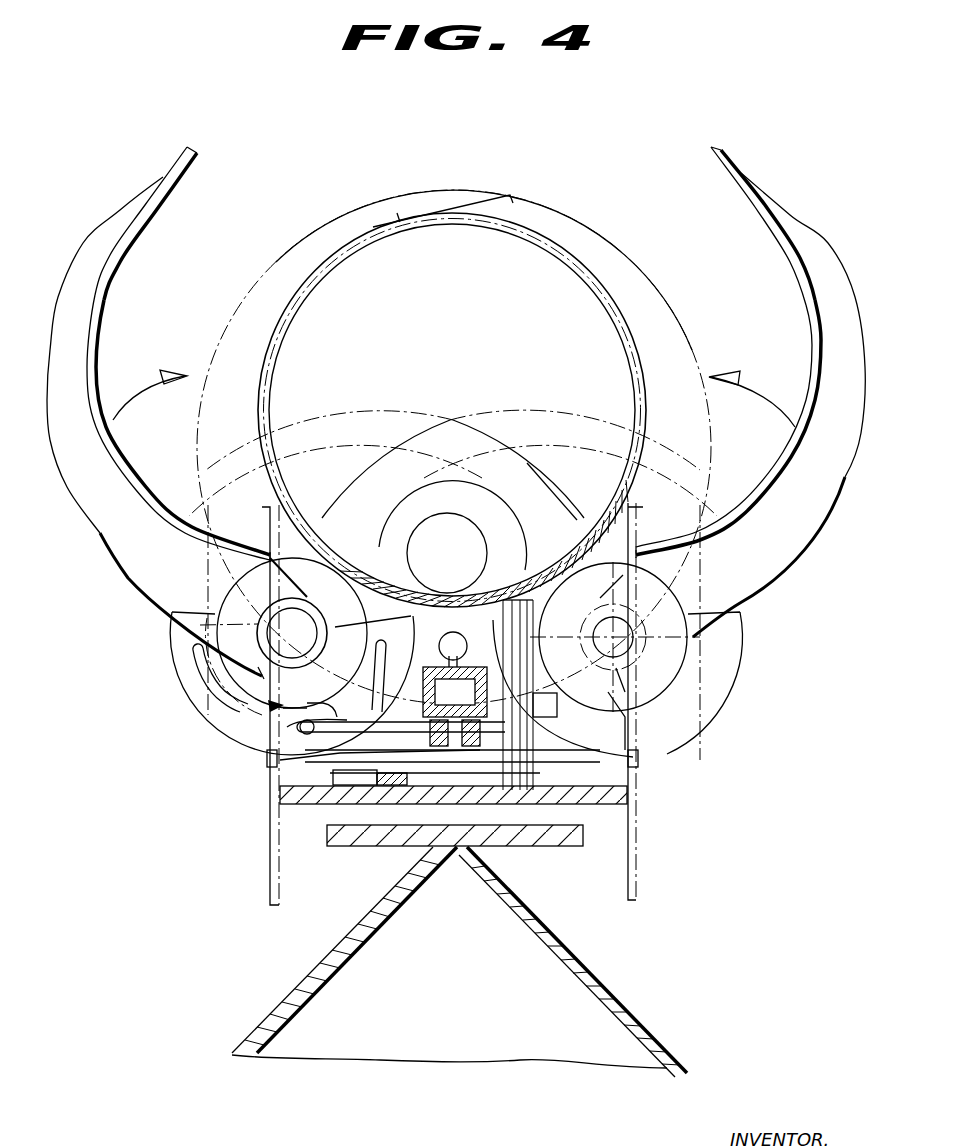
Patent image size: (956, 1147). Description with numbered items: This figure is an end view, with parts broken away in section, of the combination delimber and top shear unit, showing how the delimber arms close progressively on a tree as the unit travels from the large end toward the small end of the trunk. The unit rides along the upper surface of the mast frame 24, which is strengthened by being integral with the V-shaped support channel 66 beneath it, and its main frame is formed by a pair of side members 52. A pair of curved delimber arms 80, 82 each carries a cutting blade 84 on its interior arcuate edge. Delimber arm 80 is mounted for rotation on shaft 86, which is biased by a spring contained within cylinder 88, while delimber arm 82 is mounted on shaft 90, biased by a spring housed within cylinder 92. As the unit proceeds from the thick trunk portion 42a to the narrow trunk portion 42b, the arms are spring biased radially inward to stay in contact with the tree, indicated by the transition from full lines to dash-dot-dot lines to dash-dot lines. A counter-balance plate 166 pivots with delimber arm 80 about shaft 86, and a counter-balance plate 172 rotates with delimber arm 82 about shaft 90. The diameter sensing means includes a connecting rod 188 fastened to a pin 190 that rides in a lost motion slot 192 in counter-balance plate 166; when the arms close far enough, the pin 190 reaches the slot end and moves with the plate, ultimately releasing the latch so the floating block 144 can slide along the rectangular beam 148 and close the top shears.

The tree trunk thick portion 42a is at (463, 237).
The tree trunk narrow portion 42b is at (440, 468).
The cutting blade 84 is at (117, 267).
The delimber arm 80 is at (100, 505).
The delimber arm 82 is at (751, 412).
The cylinder 92 is at (690, 650).
The shaft 90 is at (627, 662).
The cylinder 88 is at (230, 653).
The floating block 144 is at (385, 652).
The rectangular beam 148 is at (420, 687).
The shaft 86 is at (263, 660).
The counter-balance plate 166 is at (273, 712).
The lost motion slot 192 is at (313, 727).
The pin 190 is at (313, 730).
The connecting rod 188 is at (330, 750).
The counter-balance plate 172 is at (613, 738).
The side member 52 is at (268, 878).
The mast frame 24 is at (360, 833).
The V-shaped support channel 66 is at (300, 988).